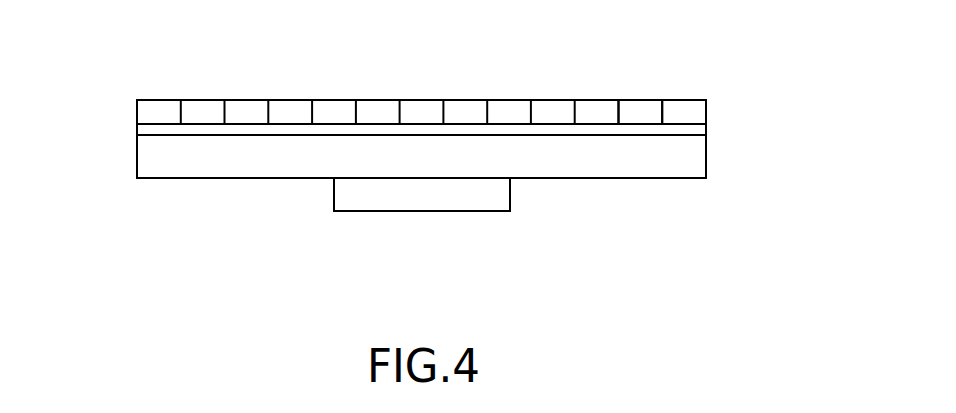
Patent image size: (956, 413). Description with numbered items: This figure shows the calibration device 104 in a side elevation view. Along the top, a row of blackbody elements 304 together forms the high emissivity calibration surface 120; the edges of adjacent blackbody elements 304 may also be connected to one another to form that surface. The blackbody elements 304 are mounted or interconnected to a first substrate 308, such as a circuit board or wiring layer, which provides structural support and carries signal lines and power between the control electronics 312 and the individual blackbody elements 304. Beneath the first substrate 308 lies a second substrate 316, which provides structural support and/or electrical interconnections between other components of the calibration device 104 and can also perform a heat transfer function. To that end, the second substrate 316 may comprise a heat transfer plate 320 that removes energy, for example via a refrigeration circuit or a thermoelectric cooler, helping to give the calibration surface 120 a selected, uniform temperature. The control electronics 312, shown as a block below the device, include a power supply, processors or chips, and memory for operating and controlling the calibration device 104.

The calibration device 104 is at (730, 153).
The high emissivity calibration surface 120 is at (643, 107).
The blackbody elements 304 is at (207, 107).
The first substrate 308 is at (139, 125).
The control electronics 312 is at (393, 203).
The second substrate 316 is at (139, 163).
The heat transfer plate 320 is at (617, 170).